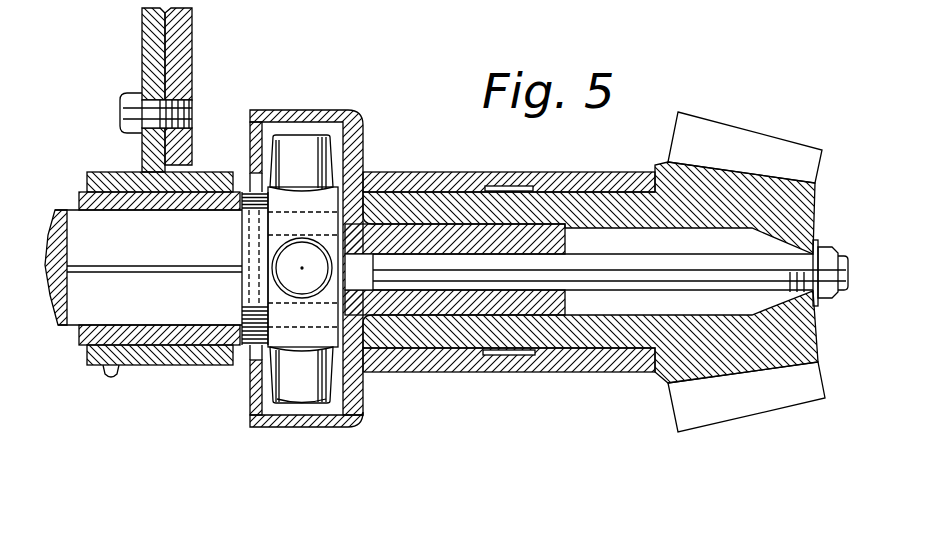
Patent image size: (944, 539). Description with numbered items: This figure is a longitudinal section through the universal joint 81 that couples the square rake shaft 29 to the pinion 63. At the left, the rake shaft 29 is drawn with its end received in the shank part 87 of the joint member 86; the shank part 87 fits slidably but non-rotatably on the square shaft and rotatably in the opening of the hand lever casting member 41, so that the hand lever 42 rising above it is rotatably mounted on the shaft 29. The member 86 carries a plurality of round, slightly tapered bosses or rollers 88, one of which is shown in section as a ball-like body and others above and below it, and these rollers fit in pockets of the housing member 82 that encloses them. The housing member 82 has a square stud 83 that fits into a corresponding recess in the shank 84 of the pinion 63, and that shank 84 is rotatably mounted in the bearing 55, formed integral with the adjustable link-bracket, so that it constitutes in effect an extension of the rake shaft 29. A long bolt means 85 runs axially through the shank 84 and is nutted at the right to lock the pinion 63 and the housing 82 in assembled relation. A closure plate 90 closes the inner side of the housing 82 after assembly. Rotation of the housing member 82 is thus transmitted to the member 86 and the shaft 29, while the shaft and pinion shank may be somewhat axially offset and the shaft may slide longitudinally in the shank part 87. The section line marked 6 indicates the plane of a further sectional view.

The section line 6- 6 is at (275, 98).
The rake shaft 29 is at (72, 318).
The hand lever casting member 41 is at (143, 360).
The hand lever 42 is at (192, 45).
The bearing 55 is at (467, 180).
The pinion 63 is at (745, 408).
The universal joint 81 is at (357, 114).
The housing member 82 is at (347, 427).
The square stud 83 is at (453, 312).
The shank 84 is at (575, 340).
The bolt means 85 is at (616, 268).
The member 86 is at (288, 340).
The shank part 87 is at (188, 337).
The bosses or rollers 88 is at (275, 265).
The closure plate 90 is at (248, 408).